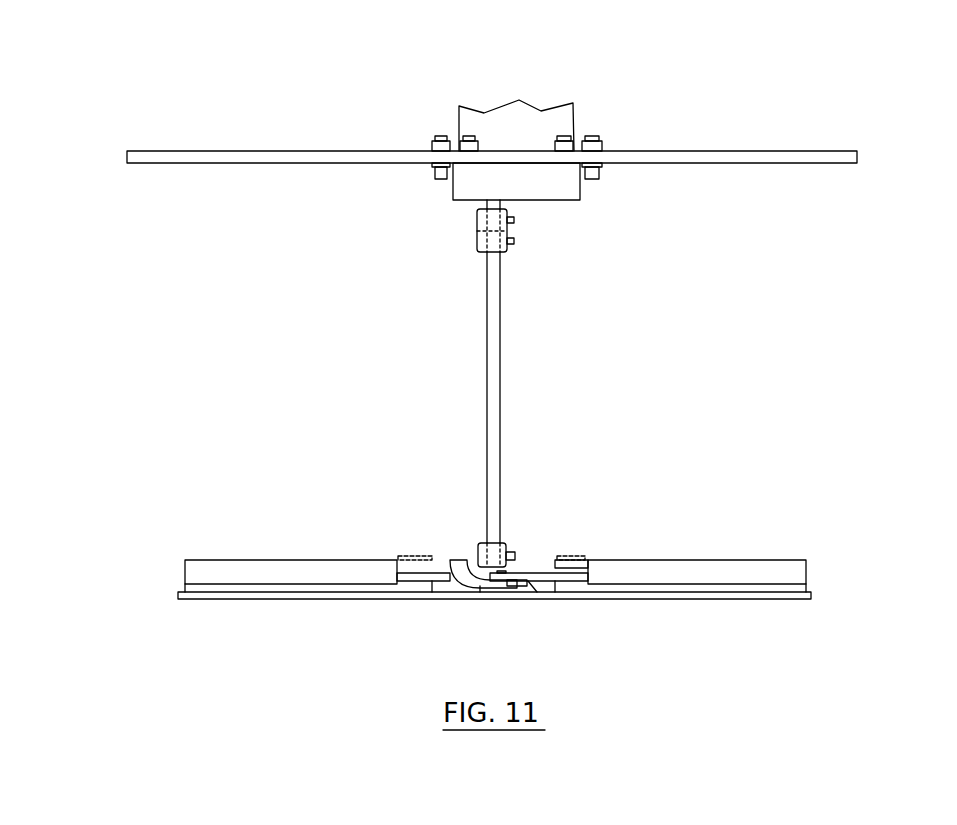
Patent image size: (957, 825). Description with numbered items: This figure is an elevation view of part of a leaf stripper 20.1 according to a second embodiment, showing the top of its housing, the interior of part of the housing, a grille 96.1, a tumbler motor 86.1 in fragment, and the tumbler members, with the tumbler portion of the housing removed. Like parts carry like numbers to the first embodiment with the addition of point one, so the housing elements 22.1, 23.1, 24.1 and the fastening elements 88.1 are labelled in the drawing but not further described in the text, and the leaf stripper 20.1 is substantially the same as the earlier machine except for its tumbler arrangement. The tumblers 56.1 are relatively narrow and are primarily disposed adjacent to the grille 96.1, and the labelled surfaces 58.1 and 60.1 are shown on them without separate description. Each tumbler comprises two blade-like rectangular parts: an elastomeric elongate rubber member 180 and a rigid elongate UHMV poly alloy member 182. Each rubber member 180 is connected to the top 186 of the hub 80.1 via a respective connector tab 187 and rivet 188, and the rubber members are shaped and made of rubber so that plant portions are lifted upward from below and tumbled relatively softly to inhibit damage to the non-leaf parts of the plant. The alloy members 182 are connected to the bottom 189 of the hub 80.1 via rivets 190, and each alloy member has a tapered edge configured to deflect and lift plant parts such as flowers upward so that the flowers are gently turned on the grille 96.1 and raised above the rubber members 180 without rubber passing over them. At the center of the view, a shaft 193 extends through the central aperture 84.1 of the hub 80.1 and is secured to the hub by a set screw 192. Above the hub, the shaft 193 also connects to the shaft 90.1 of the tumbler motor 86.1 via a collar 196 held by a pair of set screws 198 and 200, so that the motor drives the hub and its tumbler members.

The leaf stripper 20.1 is at (98, 68).
The solar panel 22.1 is at (455, 124).
The panel assembly 23.1 is at (236, 232).
The panel frame 24.1 is at (231, 150).
The tumbler motor 86.1 is at (476, 116).
The fasteners 88.1 is at (599, 135).
The shaft of the tumbler motor 90.1 is at (500, 205).
The collar 196 is at (477, 238).
The set screw 200 is at (514, 220).
The set screw 198 is at (512, 245).
The shaft 193 is at (491, 412).
The central aperture 84.1 is at (483, 553).
The elongate rubber member 180 is at (260, 532).
The tumbler 56.1 is at (208, 559).
The top surface 58.1 is at (185, 560).
The bottom surface 60.1 is at (190, 587).
The grille 96.1 is at (178, 600).
The elongate UHMV poly alloy member 182 is at (242, 594).
The set screw 192 is at (516, 560).
The bottom of the hub 189 is at (443, 578).
The rivets 190 is at (403, 558).
The rivet 188 is at (414, 558).
The connector tab 187 is at (435, 561).
The hub 80.1 is at (541, 560).
The top of the hub 186 is at (525, 566).